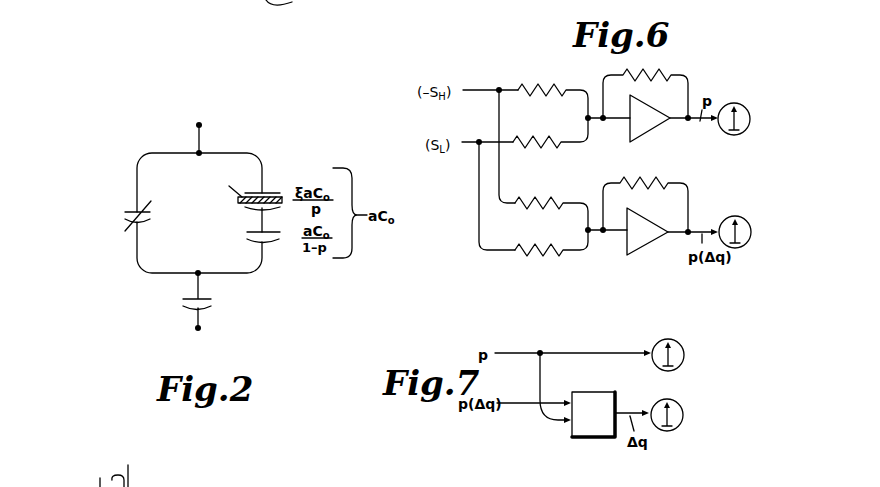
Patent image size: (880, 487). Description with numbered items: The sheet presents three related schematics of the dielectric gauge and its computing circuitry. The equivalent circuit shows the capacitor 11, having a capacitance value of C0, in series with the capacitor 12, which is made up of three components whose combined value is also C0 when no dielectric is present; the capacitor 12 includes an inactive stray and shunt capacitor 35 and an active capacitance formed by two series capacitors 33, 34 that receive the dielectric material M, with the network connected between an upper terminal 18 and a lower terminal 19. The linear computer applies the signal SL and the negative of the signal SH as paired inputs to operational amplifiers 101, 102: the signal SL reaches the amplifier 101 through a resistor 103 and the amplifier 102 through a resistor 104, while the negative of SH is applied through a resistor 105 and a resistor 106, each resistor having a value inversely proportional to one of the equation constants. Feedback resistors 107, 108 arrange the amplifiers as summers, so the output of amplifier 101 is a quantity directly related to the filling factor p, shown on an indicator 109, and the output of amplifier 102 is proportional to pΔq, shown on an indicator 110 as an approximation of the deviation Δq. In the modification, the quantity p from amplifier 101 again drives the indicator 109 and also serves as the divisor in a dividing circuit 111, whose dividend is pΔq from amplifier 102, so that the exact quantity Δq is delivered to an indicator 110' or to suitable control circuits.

In FIG. 2, the capacitor 11 is at (207, 304).
In FIG. 2, the capacitor 12 is at (211, 230).
In FIG. 2, the upper terminal 18 is at (202, 124).
In FIG. 2, the lower terminal 19 is at (200, 328).
In FIG. 2, the active capacitor 33 is at (268, 192).
In FIG. 2, the active capacitor 34 is at (243, 235).
In FIG. 2, the inactive stray and shunt capacitor 35 is at (117, 208).
In FIG. 6, the operational amplifier 101 is at (652, 127).
In FIG. 6, the operational amplifier 102 is at (645, 250).
In FIG. 6, the resistor 103 is at (560, 145).
In FIG. 6, the resistor 104 is at (547, 254).
In FIG. 6, the resistor 105 is at (537, 87).
In FIG. 6, the resistor 106 is at (530, 198).
In FIG. 6, the feedback resistor 107 is at (658, 74).
In FIG. 6, the feedback resistor 108 is at (647, 182).
In FIG. 6, the indicator 109 is at (750, 114).
In FIG. 7, the indicator 109 is at (684, 350).
In FIG. 6, the indicator 110 is at (757, 232).
In FIG. 7, the indicator 110' is at (694, 415).
In FIG. 7, the dividing circuit 111 is at (602, 438).